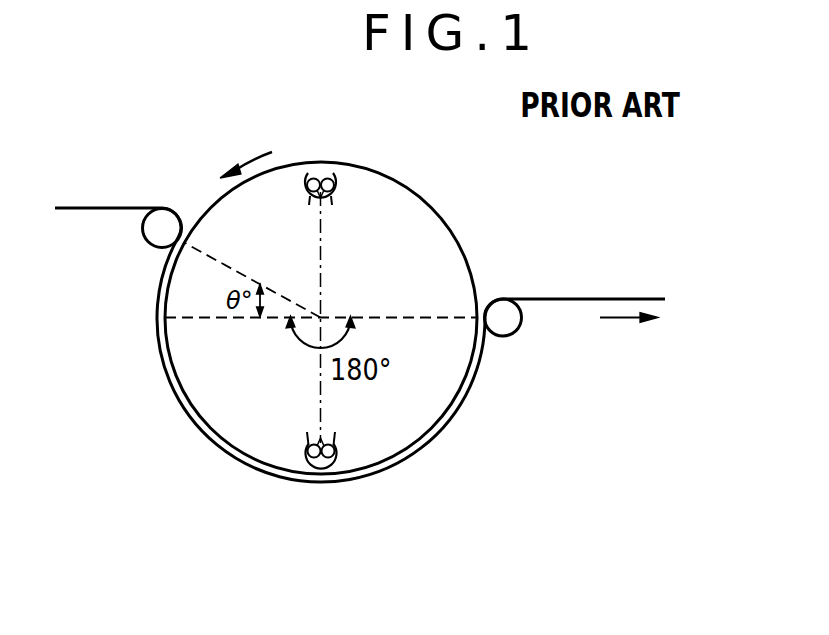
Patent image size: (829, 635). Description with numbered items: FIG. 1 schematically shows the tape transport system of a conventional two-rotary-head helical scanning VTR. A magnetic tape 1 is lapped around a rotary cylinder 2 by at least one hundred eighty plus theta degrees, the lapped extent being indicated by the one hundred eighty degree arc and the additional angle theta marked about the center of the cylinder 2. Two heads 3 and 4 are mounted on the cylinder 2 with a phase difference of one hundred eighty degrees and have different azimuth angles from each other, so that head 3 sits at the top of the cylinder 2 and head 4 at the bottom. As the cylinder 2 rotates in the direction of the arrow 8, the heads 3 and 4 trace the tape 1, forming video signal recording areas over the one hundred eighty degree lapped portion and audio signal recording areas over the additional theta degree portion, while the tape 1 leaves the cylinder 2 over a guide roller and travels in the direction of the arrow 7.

The magnetic tape 1 is at (583, 296).
The rotary cylinder 2 is at (443, 250).
The head 3 is at (333, 180).
The head 4 is at (340, 453).
The web travel direction arrow 7 is at (617, 319).
The drum rotation direction arrow 8 is at (248, 162).